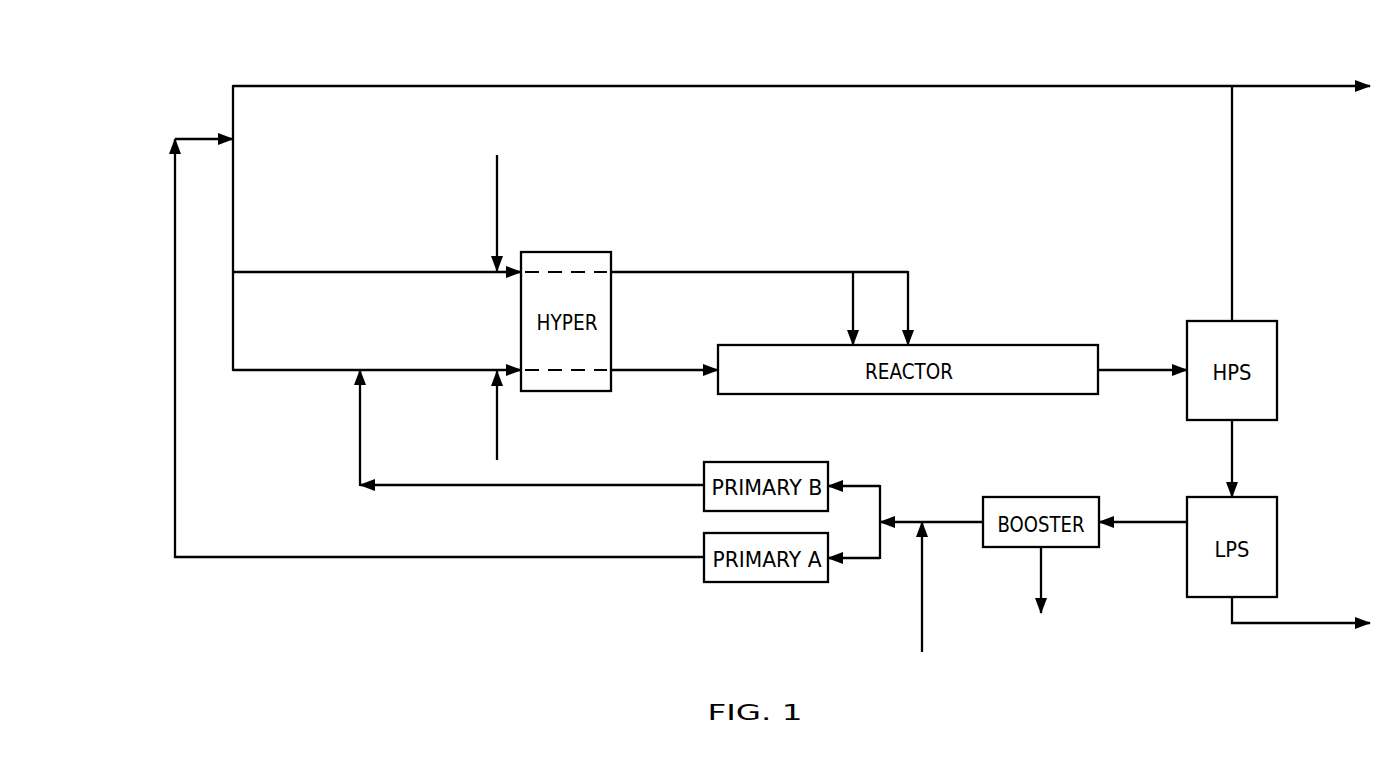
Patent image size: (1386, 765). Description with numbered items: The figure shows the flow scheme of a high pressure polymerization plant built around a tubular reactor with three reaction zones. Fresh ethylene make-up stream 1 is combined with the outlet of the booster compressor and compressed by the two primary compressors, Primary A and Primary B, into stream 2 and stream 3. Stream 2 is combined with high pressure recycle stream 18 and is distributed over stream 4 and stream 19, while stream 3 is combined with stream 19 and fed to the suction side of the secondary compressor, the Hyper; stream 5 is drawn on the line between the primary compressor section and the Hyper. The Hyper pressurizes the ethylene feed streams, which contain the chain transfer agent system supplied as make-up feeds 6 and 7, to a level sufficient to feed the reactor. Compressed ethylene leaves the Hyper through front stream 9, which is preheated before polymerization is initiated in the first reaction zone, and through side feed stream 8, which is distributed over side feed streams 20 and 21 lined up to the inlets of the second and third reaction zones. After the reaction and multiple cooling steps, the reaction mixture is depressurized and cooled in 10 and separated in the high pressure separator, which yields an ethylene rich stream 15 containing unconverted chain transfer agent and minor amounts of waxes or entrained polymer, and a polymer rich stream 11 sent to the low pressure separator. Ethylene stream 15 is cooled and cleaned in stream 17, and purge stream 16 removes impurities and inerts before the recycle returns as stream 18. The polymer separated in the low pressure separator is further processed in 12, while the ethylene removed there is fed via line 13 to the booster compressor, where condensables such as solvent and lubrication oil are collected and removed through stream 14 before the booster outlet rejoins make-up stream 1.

The fresh ethylene make-up stream 1 is at (905, 568).
The primary compressor A outlet stream 2 is at (439, 348).
The primary compressor B outlet stream 3 is at (532, 428).
The secondary compressor suction stream 4 is at (377, 246).
The primary compressor A discharge to hyper compressor 5 is at (377, 341).
The chain transfer agent make-up feed 6 is at (528, 208).
The chain transfer agent make-up feed 7 is at (523, 417).
The side feed stream 8 is at (759, 247).
The front feed stream 9 is at (664, 370).
The depressurization and cooling stage 10 is at (1142, 342).
The polymer rich stream 11 is at (1259, 458).
The polymer processing stage 12 is at (1301, 636).
The low pressure separator ethylene line 13 is at (1143, 495).
The condensables removal stream 14 is at (1070, 595).
The ethylene rich stream 15 is at (1260, 203).
The purge stream 16 is at (1301, 62).
The high pressure recycle cooling and cleaning stream 17 is at (732, 58).
The high pressure recycle stream 18 is at (263, 178).
The distributed recycle stream 19 is at (266, 321).
The side feed stream to second reaction zone 20 is at (806, 308).
The side feed stream to third reaction zone 21 is at (936, 308).